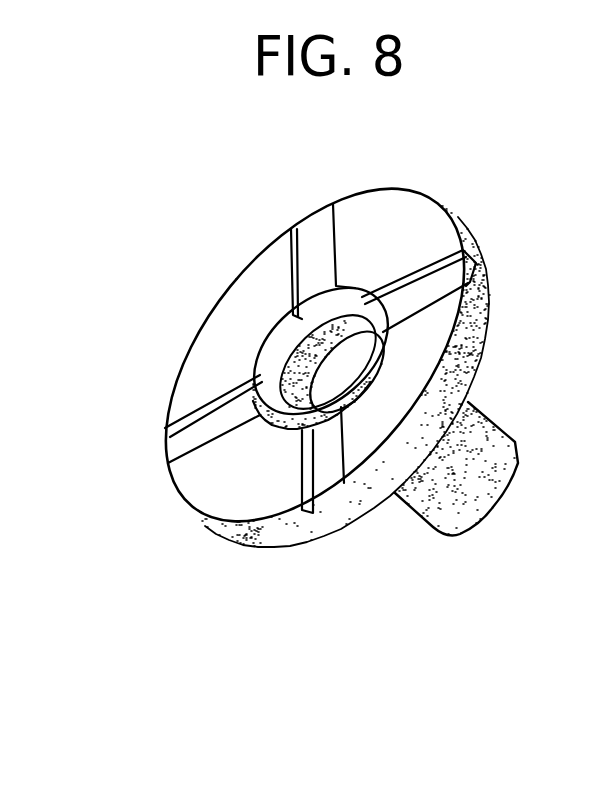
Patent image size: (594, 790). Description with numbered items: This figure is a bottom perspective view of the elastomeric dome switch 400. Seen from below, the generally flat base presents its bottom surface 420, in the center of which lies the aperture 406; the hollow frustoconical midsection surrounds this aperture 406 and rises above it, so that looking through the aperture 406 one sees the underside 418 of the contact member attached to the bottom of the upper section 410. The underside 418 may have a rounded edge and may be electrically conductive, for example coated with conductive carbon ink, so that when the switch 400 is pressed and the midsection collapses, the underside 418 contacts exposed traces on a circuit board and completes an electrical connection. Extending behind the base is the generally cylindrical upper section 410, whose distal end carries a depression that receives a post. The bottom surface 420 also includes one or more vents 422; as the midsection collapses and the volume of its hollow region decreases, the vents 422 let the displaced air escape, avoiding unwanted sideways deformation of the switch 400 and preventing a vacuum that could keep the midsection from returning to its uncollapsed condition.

The dome switch 400 is at (389, 558).
The aperture 406 is at (267, 337).
The upper section 410 is at (513, 433).
The underside 418 is at (351, 360).
The bottom surface 420 is at (218, 502).
The vents 422 is at (317, 247).